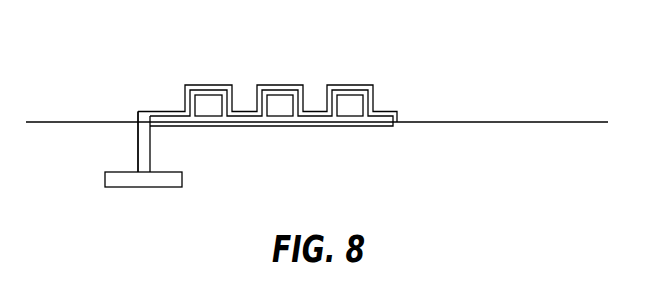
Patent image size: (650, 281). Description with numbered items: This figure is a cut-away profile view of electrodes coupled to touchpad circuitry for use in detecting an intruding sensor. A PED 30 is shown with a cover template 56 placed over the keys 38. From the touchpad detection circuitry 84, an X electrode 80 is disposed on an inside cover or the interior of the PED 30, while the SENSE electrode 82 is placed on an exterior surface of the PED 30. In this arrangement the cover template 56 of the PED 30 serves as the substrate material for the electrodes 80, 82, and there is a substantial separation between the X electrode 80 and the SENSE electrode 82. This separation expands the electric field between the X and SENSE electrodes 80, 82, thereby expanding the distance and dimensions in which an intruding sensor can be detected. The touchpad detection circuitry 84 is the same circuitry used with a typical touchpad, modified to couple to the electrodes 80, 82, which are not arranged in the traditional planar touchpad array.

The PED 30 is at (482, 121).
The keys 38 is at (350, 104).
The cover template 56 is at (382, 108).
The X electrode 80 is at (150, 160).
The SENSE electrode 82 is at (138, 137).
The touchpad detection circuitry 84 is at (135, 187).